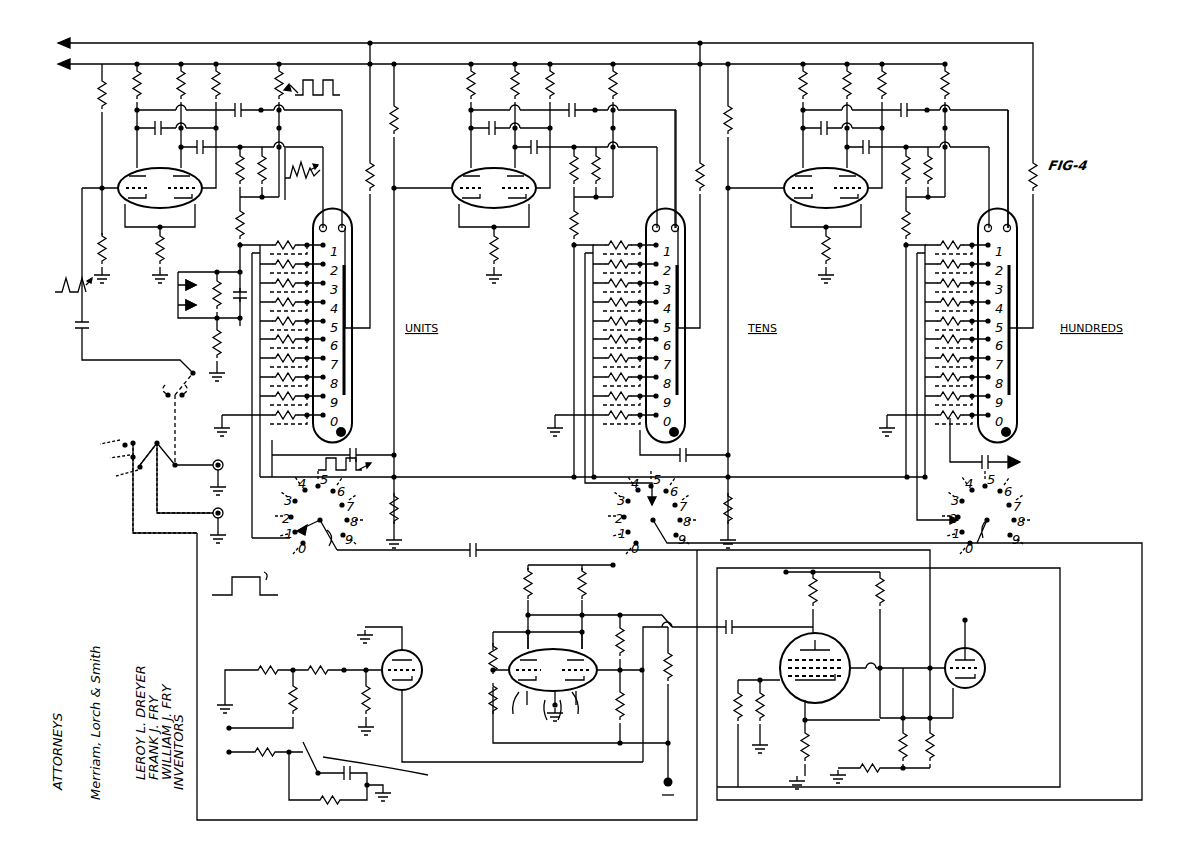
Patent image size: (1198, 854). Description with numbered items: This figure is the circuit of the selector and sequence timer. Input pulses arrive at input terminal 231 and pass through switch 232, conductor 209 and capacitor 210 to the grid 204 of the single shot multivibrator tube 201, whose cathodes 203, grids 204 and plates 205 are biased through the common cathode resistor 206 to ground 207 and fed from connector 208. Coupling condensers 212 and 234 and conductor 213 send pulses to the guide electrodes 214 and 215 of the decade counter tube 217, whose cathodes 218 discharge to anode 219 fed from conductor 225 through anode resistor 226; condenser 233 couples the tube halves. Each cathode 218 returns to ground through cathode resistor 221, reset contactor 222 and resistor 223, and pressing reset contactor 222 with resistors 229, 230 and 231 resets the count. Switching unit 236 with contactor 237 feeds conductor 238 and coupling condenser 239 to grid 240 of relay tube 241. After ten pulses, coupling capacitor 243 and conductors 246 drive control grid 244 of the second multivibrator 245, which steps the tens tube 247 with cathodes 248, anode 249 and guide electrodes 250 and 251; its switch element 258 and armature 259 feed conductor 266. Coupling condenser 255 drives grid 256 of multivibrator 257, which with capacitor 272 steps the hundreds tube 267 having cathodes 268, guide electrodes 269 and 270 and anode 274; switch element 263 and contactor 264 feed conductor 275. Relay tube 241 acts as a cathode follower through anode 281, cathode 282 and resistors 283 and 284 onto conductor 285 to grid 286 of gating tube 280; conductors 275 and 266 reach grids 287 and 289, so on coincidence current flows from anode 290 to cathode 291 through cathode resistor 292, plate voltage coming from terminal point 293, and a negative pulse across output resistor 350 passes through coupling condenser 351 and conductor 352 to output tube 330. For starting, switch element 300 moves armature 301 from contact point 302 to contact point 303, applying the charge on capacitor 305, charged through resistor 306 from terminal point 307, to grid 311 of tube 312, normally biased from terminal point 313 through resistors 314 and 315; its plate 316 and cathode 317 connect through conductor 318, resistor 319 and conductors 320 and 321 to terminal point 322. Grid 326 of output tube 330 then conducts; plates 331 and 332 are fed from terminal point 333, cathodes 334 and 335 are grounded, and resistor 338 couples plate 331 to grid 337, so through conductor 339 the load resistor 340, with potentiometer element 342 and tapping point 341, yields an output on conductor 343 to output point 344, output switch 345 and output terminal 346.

The single shot multivibrator tube 201 is at (168, 166).
The cathode element 203 is at (204, 234).
The grid or control electrode element 204 is at (155, 205).
The plate or anode 205 is at (127, 165).
The common cathode resistor 206 is at (158, 259).
The ground 207 is at (154, 277).
The connector 208 is at (263, 64).
The conductor 209 is at (86, 303).
The capacitor 210 is at (87, 327).
The coupling condenser 212 is at (206, 144).
The conductor 213 is at (306, 147).
The guide electrode 214 is at (320, 204).
The guide electrode 215 is at (352, 215).
The glow-transfer decade counter tube 217 is at (347, 379).
The cathodes 218 is at (333, 245).
The anode element 219 is at (348, 346).
The cathode resistor 221 is at (277, 241).
The reset contactor 222 is at (202, 318).
The resistor 223 is at (216, 352).
The conductor 225 is at (488, 43).
The anode resistor 226 is at (362, 173).
The resistor 229 is at (282, 82).
The resistor 230 is at (240, 221).
The resistor 231 is at (214, 276).
The switch 232 is at (202, 392).
The coupling condenser 233 is at (174, 106).
The coupling condenser 234 is at (240, 106).
The switching unit 236 is at (334, 506).
The contactor 237 is at (318, 543).
The conductor 238 is at (568, 546).
The coupling condenser 239 is at (489, 542).
The control grid element 240 is at (954, 660).
The relay tube 241 is at (984, 650).
The coupling capacitor 243 is at (356, 446).
The control electrode 244 is at (454, 198).
The second one-shot multivibrator tube combination 245 is at (508, 168).
The conductor 246 is at (394, 270).
The tube 247 is at (684, 385).
The cathode elements 248 is at (674, 247).
The anode 249 is at (680, 354).
The guide electrode 250 is at (646, 234).
The guide electrode 251 is at (682, 230).
The coupling condenser 255 is at (692, 448).
The control grid 256 is at (786, 201).
The multivibrator combination 257 is at (840, 166).
The switch element 258 is at (674, 500).
The switch armature 259 is at (624, 517).
The switch element 263 is at (1008, 499).
The contactor 264 is at (975, 550).
The conductor 266 is at (972, 784).
The glow transfer decade counter tube 267 is at (1024, 394).
The cathode element 268 is at (1018, 243).
The guide electrode 269 is at (974, 222).
The guide electrode 270 is at (1016, 220).
The capacitor 272 is at (905, 106).
The anode 274 is at (1022, 367).
The conductor 275 is at (1108, 794).
The gating tube 280 is at (832, 644).
The anode 281 is at (974, 648).
The cathode 282 is at (960, 692).
The resistor 283 is at (899, 748).
The resistor 284 is at (868, 758).
The conductor 285 is at (906, 675).
The number three grid 286 is at (852, 692).
The number two grid 287 is at (782, 656).
The number one grid 289 is at (776, 717).
The anode 290 is at (794, 646).
The cathode 291 is at (820, 706).
The cathode resistor 292 is at (798, 762).
The terminal point 293 is at (823, 640).
The switch element 300 is at (328, 730).
The armature 301 is at (288, 778).
The contact point 302 is at (322, 735).
The contact point 303 is at (335, 753).
The capacitor 305 is at (338, 780).
The resistor 306 is at (267, 745).
The terminal point 307 is at (223, 752).
The grid or control electrode 311 is at (380, 656).
The tube 312 is at (422, 666).
The terminal point 313 is at (220, 727).
The resistor 314 is at (288, 698).
The resistor 315 is at (328, 663).
The plate or anode 316 is at (504, 694).
The cathode 317 is at (405, 690).
The conductor 318 is at (456, 756).
The resistor 319 is at (626, 710).
The conductor 320 is at (488, 742).
The conductor 321 is at (668, 748).
The terminal point 322 is at (658, 784).
The grid or control electrode 326 is at (584, 717).
The output tube 330 is at (564, 648).
The plate or anode 331 is at (596, 648).
The plate or anode 332 is at (528, 651).
The terminal point 333 is at (604, 604).
The cathode element 334 is at (590, 735).
The cathode element 335 is at (524, 723).
The grid 337 is at (513, 707).
The resistor 338 is at (480, 637).
The conductor 339 is at (644, 616).
The output potentiometer 340 is at (516, 583).
The tapping point 341 is at (672, 670).
The potentiometer 342 is at (672, 655).
The conductor 343 is at (232, 610).
The output point 344 is at (122, 474).
The output switch 345 is at (134, 440).
The output terminal 346 is at (210, 515).
The output resistor 350 is at (818, 588).
The coupling condenser 351 is at (735, 616).
The conductor 352 is at (680, 622).